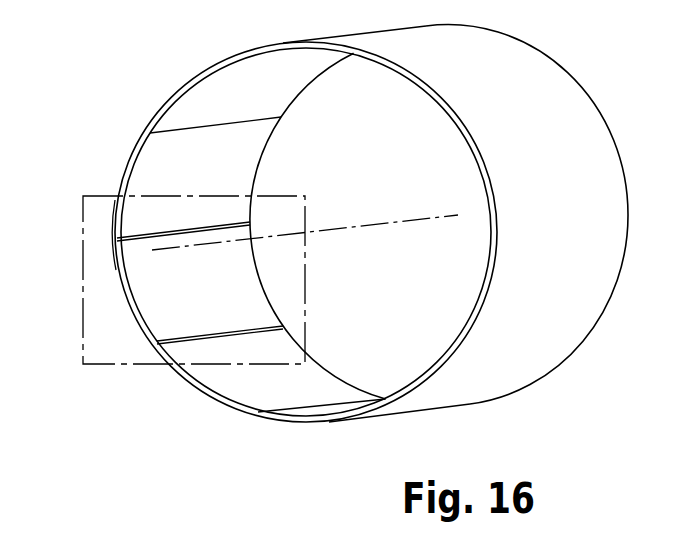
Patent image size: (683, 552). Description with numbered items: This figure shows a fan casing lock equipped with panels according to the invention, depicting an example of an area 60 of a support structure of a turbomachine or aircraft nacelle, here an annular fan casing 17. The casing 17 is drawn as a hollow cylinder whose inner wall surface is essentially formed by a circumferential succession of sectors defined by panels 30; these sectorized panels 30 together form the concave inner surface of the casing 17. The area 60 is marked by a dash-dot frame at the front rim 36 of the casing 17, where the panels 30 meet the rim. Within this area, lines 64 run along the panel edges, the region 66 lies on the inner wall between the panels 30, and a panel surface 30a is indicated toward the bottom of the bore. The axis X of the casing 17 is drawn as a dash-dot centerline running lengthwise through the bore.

The casing 17 is at (568, 66).
The panels 30 is at (236, 87).
The fin surface 30a is at (232, 382).
The front rim 36 is at (115, 264).
The area 60 is at (118, 366).
The fin edge strips 64 is at (255, 250).
The inner wall surface 66 is at (197, 310).
The axis X is at (372, 224).